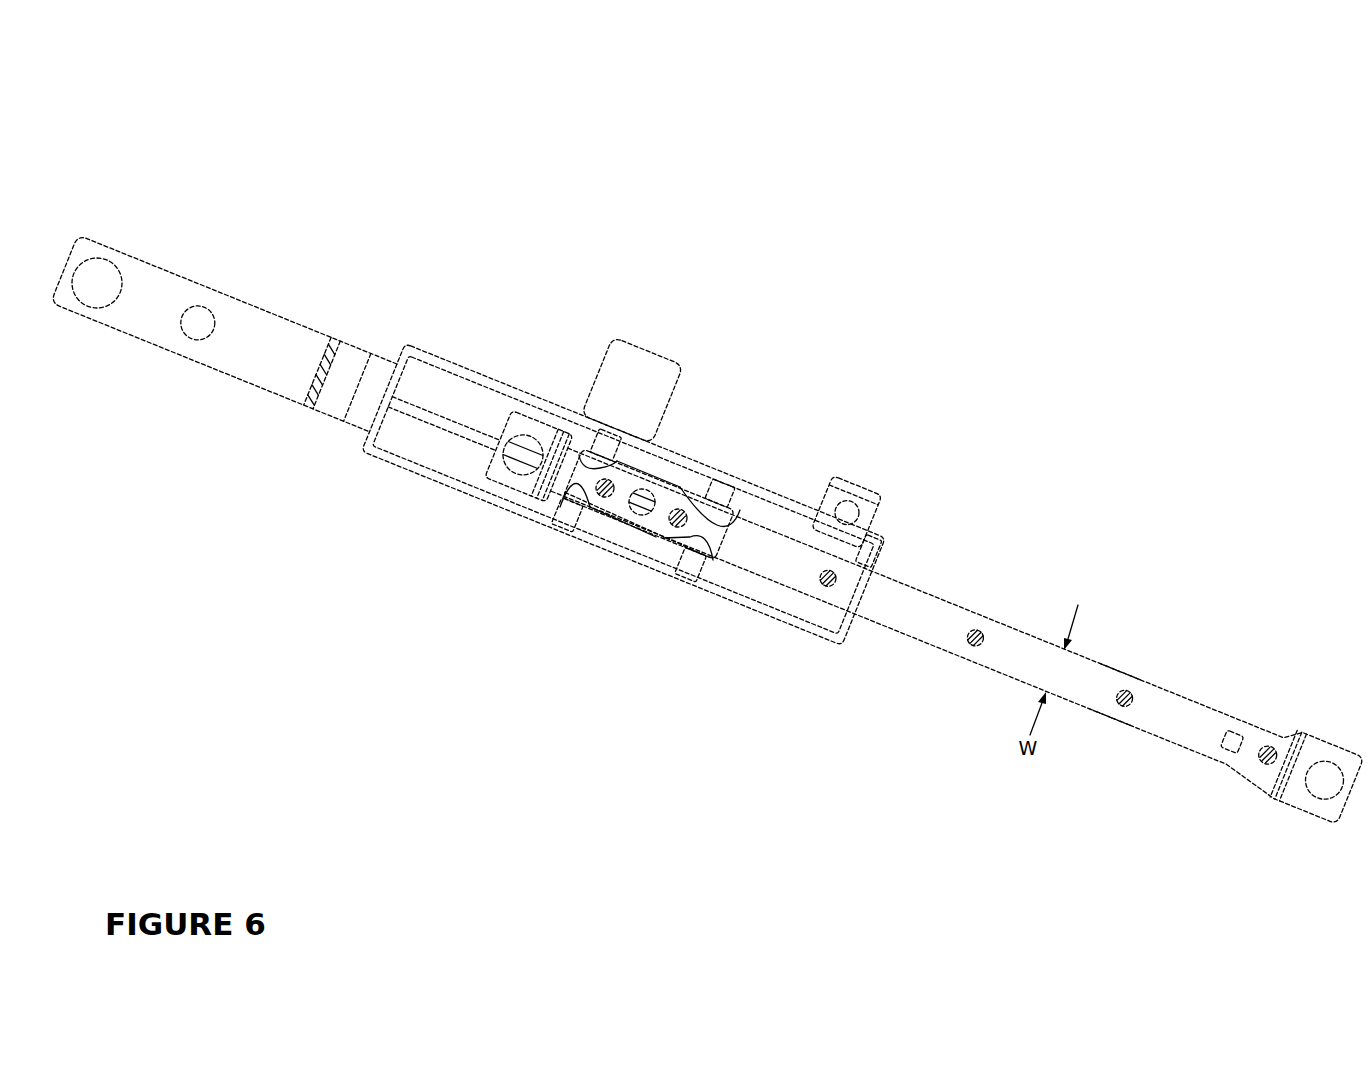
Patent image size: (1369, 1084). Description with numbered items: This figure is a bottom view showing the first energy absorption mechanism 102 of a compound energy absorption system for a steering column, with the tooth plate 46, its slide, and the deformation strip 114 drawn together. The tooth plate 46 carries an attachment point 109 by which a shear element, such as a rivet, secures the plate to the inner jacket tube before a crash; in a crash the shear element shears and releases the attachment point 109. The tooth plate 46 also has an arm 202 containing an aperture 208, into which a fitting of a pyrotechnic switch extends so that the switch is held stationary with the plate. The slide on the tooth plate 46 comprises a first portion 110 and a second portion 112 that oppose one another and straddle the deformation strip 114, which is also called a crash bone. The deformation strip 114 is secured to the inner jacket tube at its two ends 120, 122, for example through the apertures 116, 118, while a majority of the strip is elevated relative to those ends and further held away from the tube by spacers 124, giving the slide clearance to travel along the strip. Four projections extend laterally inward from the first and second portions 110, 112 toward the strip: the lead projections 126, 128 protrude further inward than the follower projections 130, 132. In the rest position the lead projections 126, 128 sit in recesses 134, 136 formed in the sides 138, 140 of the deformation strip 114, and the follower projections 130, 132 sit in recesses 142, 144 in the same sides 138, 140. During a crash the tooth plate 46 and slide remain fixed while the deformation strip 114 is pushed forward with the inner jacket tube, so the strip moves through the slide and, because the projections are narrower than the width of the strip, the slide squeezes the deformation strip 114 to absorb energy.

The first energy absorption mechanism 102 is at (428, 112).
The tooth plate 46 is at (402, 338).
The arm 202 is at (225, 392).
The aperture 208 is at (82, 300).
The end 120 is at (472, 468).
The aperture 116 is at (517, 473).
The attachment point 109 is at (860, 512).
The deformation strip 114 is at (1172, 704).
The side 138 is at (1121, 668).
The side 140 is at (1110, 728).
The end 122 is at (1354, 815).
The aperture 118 is at (1318, 797).
The spacers 124 is at (826, 588).
The follower projection 130 is at (617, 461).
The first portion 110 is at (662, 462).
The recess 142 is at (579, 455).
The lead projection 126 is at (683, 492).
The recess 134 is at (740, 510).
The recess 144 is at (560, 507).
The follower projection 132 is at (595, 513).
The second portion 112 is at (623, 542).
The recess 136 is at (713, 560).
The lead projection 128 is at (663, 538).